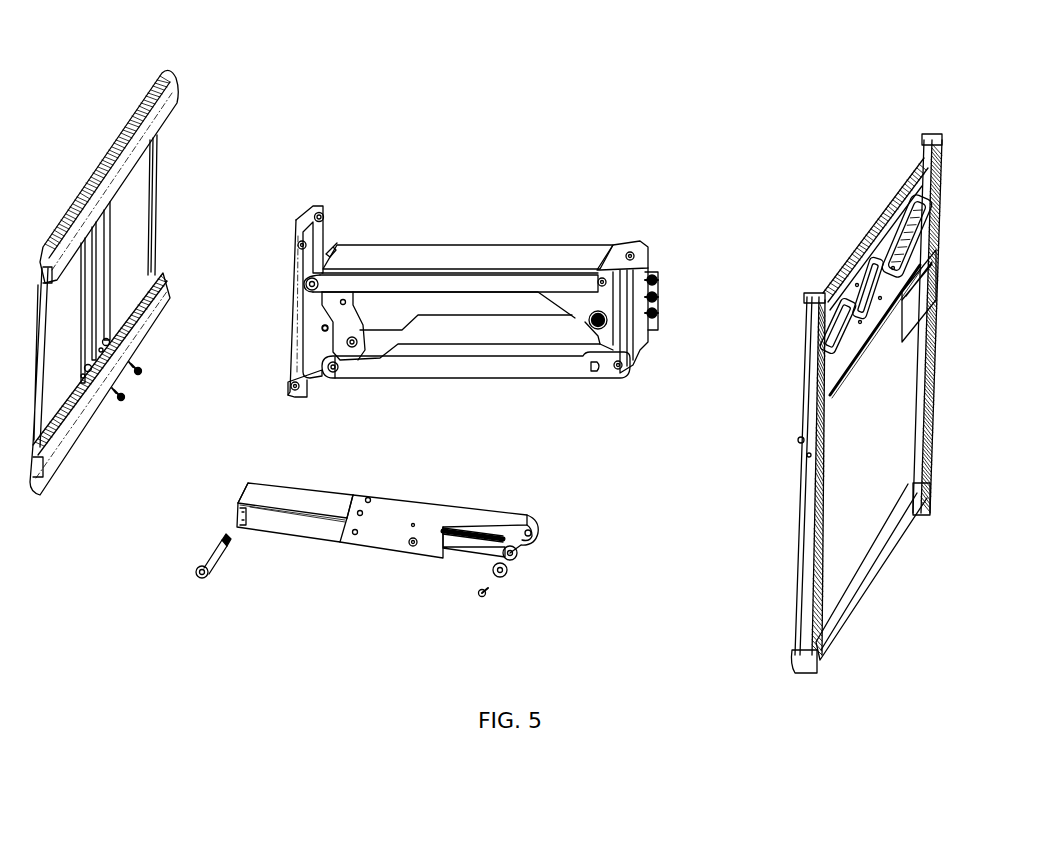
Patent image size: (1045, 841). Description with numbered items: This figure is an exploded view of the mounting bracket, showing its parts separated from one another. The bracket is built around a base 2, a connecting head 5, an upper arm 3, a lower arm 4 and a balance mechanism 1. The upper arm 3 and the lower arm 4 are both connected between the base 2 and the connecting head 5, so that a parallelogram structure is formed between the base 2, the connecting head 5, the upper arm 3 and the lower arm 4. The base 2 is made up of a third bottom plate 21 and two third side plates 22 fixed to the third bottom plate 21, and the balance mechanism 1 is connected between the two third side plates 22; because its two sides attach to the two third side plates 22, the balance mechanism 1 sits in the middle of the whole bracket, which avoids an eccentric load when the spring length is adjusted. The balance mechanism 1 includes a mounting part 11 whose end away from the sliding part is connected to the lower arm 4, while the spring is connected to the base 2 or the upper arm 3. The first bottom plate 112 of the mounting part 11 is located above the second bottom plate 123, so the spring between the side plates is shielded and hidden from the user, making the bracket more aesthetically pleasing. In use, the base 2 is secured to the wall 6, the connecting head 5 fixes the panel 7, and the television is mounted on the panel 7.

The balance mechanism 1 is at (387, 572).
The mounting part 11 is at (442, 523).
The first bottom plate 112 is at (487, 520).
The second bottom plate 123 is at (297, 500).
The base 2 is at (233, 56).
The third bottom plate 21 is at (319, 265).
The third side plates 22 is at (310, 345).
The upper arm 3 is at (460, 278).
The lower arm 4 is at (526, 376).
The connecting head 5 is at (634, 258).
The wall 6 is at (98, 203).
The panel 7 is at (890, 207).